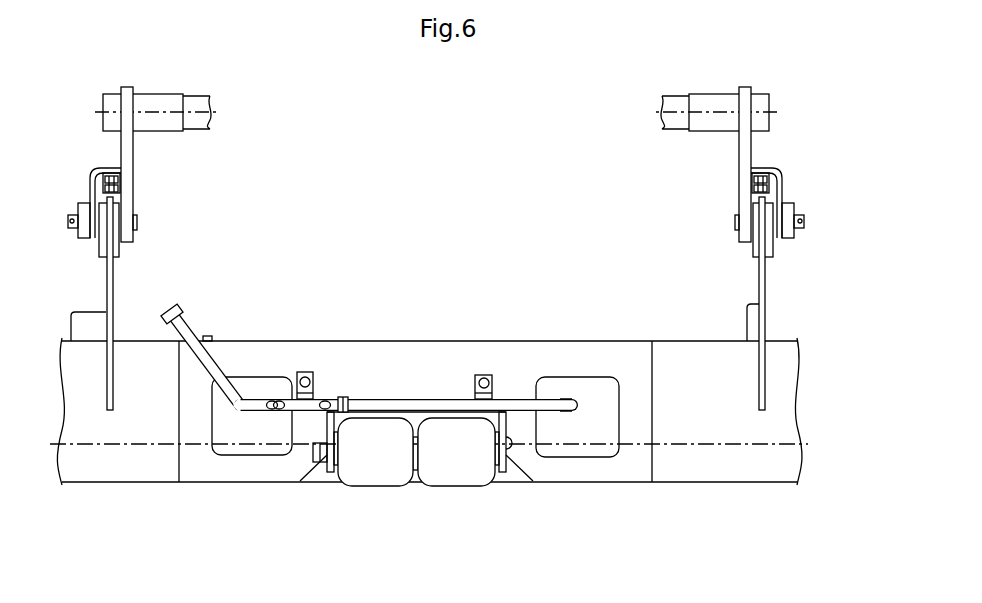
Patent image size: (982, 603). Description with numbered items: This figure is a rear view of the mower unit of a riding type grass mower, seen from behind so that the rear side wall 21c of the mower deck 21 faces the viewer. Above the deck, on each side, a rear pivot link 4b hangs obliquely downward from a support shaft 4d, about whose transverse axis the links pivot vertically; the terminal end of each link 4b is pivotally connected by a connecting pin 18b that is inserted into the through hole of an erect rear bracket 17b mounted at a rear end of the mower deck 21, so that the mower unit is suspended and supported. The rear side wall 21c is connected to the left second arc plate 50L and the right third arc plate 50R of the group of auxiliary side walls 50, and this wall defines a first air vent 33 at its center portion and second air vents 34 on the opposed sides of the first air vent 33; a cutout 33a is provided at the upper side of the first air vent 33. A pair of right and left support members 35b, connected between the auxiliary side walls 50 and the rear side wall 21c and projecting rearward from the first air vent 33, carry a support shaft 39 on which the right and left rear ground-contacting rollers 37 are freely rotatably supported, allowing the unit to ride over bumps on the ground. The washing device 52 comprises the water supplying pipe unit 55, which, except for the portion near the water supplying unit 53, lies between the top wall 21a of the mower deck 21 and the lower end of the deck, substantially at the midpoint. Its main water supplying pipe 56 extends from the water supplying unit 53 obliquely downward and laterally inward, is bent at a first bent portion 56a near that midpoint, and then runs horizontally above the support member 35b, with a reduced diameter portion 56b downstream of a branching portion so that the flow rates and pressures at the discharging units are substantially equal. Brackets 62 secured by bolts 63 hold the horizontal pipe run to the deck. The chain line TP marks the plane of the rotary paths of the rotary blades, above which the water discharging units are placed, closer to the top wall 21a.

The support shaft 4d is at (195, 98).
The rear pivot link 4b is at (128, 157).
The connecting pin 18b is at (73, 214).
The rear bracket 17b is at (112, 275).
The fuel supply device 52 is at (220, 308).
The water supplying unit 53 is at (178, 303).
The first bent portion 56a is at (247, 398).
The main water supplying pipe 56 is at (313, 408).
The reduced diameter portion 56b is at (502, 398).
The water supplying pipe unit 55 is at (403, 372).
The pipe bracket 62 is at (392, 349).
The bracket bolt 63 is at (318, 385).
The mower deck 21 is at (435, 366).
The top wall 21a is at (345, 342).
The rear side wall 21c is at (578, 357).
The plane of rotary blade paths TP is at (712, 443).
The support shaft 39 is at (510, 457).
The support member 35b is at (320, 450).
The first air vent 33 is at (315, 472).
The cutout 33a is at (343, 412).
The rear ground-contacting roller 37 is at (448, 482).
The second air vent 34 is at (226, 455).
The auxiliary side walls 50 is at (429, 403).
The left second arc plate 50L is at (103, 463).
The right third arc plate 50R is at (743, 460).